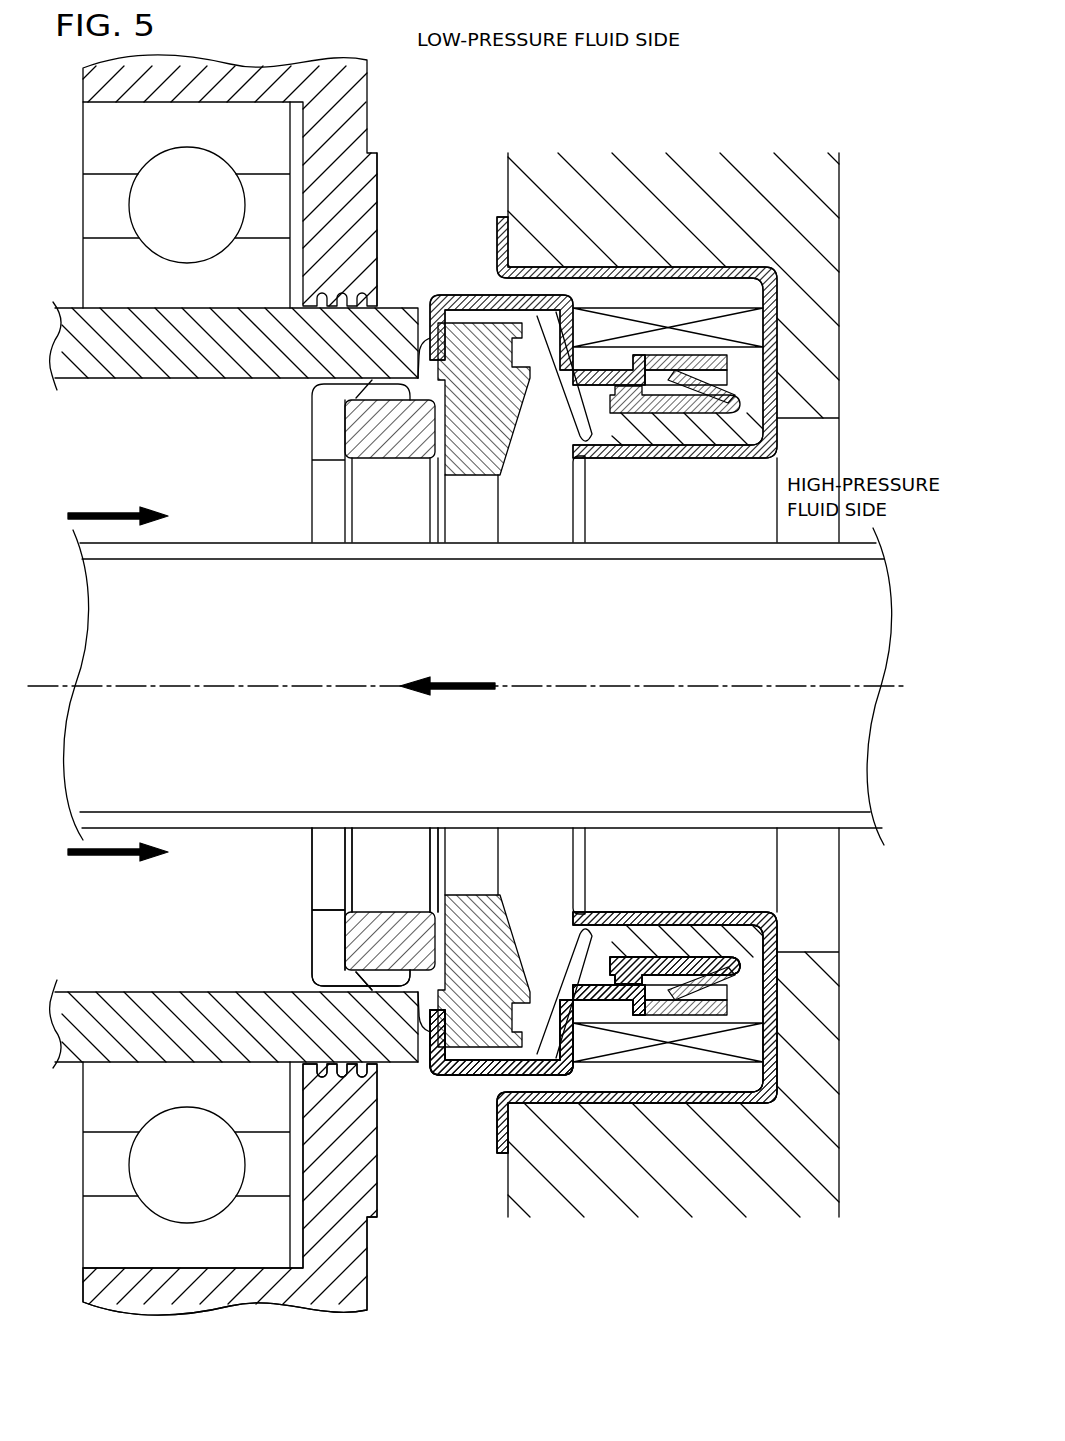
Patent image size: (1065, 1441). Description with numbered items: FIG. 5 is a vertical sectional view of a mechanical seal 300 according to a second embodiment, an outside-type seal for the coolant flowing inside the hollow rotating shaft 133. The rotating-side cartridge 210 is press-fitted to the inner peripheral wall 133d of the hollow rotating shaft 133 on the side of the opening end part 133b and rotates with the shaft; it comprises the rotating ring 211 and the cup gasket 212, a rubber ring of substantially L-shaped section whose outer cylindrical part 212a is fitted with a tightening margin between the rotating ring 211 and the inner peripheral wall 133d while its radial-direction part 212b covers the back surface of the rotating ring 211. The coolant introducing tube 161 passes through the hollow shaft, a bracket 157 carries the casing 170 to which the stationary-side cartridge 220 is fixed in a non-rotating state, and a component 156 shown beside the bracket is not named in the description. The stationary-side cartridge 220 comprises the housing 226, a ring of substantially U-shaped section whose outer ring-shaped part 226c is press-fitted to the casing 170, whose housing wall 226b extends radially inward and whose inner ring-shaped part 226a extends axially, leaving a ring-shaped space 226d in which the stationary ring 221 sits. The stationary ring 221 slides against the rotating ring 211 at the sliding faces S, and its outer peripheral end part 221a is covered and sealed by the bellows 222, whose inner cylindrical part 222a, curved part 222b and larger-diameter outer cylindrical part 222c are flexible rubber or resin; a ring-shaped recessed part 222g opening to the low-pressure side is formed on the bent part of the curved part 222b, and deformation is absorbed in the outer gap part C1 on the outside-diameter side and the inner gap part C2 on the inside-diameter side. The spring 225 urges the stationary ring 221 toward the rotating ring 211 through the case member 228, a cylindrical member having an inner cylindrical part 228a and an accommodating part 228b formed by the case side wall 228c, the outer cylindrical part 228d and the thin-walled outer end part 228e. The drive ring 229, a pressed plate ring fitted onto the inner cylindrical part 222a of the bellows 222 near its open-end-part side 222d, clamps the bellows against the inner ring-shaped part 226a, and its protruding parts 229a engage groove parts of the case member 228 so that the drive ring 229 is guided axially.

The hollow rotating shaft 133 is at (77, 306).
The opening end part 133b is at (413, 338).
The inner peripheral wall 133d is at (104, 383).
The bearing 156 is at (105, 1235).
The bracket 157 is at (157, 1292).
The coolant introducing tube 161 is at (858, 827).
The casing 170 is at (820, 238).
The rotating-side cartridge 210 is at (207, 425).
The rotating ring 211 is at (345, 487).
The cup gasket 212 is at (316, 437).
The outer cylindrical part 212a is at (345, 975).
The radial-direction part 212b is at (325, 932).
The stationary-side cartridge 220 is at (748, 108).
The stationary ring 221 is at (483, 330).
The outer peripheral end part 221a is at (335, 1008).
The bellows 222 is at (550, 318).
The inner cylindrical part 222a is at (680, 932).
The curved part 222b is at (566, 938).
The outer cylindrical part 222c is at (460, 1062).
The open-end-part side 222d is at (745, 967).
The ring-shaped recessed part 222g is at (583, 1058).
The spring 225 is at (690, 308).
The housing 226 is at (497, 236).
The inner ring-shaped part 226a is at (700, 912).
The housing wall 226b is at (766, 1040).
The outer ring-shaped part 226c is at (710, 1105).
The ring-shaped space 226d is at (777, 306).
The case member 228 is at (610, 398).
The inner cylindrical part 228a is at (617, 1030).
The accommodating part 228b is at (650, 1312).
The case side wall 228c is at (592, 1030).
The outer cylindrical part 228d is at (518, 1070).
The outer end part 228e is at (423, 1058).
The drive ring 229 is at (668, 355).
The protruding part 229a is at (762, 380).
The mechanical seal 300 is at (803, 122).
The outer gap part C1 is at (612, 458).
The inner gap part C2 is at (544, 506).
The sliding face S is at (464, 480).